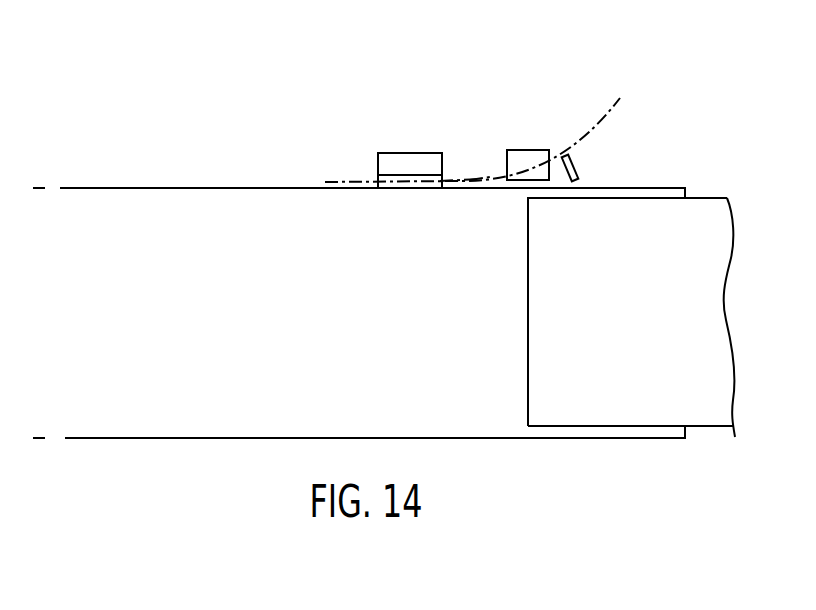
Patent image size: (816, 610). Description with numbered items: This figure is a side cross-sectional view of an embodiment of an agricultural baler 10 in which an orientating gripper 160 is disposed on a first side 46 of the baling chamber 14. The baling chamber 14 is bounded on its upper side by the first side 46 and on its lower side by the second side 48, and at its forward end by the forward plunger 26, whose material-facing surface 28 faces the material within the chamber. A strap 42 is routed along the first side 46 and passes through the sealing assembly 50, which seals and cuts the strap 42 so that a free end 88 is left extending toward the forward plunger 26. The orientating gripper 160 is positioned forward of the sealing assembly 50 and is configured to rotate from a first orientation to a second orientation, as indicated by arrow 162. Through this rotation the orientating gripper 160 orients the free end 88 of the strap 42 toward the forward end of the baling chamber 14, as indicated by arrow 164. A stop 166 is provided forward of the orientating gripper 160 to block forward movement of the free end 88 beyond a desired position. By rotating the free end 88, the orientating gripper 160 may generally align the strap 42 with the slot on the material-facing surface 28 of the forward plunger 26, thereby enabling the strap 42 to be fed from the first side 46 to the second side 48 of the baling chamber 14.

The agricultural baler 10 is at (118, 167).
The baling chamber 14 is at (254, 319).
The forward plunger 26 is at (617, 415).
The material-facing surface 28 is at (528, 312).
The strap 42 is at (615, 102).
The first side 46 is at (211, 188).
The second side 48 is at (375, 440).
The sealing assembly 50 is at (410, 153).
The free end 88 is at (465, 182).
The orientating gripper 160 is at (480, 162).
The arrow 162 is at (512, 128).
The arrow 164 is at (507, 217).
The stop 166 is at (574, 166).